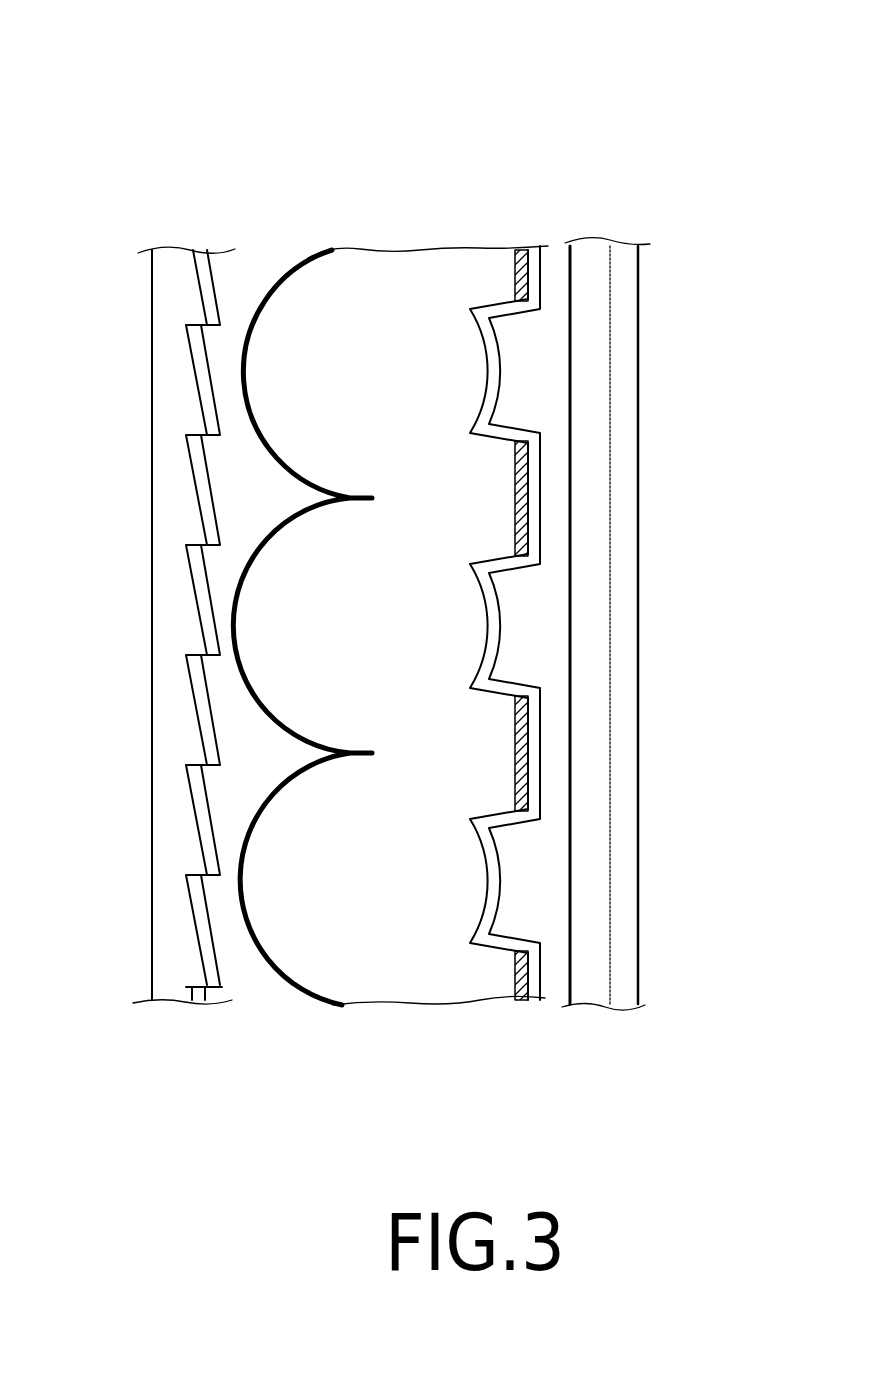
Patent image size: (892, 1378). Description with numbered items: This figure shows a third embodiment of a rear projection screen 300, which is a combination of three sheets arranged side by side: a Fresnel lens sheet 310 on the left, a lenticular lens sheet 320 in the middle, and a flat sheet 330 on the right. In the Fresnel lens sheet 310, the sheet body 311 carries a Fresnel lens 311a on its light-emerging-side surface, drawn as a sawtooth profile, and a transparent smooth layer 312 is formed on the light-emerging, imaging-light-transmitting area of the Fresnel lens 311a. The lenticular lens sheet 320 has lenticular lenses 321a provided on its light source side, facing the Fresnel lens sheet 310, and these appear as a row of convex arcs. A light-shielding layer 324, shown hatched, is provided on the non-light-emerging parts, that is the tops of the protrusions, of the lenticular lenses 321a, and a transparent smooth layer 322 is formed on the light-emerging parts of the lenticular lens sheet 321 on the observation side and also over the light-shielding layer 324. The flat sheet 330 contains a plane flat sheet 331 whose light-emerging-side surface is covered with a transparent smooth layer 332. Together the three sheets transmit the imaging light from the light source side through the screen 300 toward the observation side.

The rear projection screen 300 is at (717, 78).
The Fresnel lens sheet 310 is at (235, 157).
The Fresnel lens sheet body 311 is at (172, 258).
The Fresnel lens 311a is at (198, 937).
The transparent smooth layer 312 is at (217, 268).
The lenticular lens sheet 320 is at (248, 157).
The lenticular lens sheet body 321 is at (355, 292).
The lenticular lenses 321a is at (298, 963).
The transparent smooth layer 322 is at (488, 303).
The light-shielding layer 324 is at (523, 255).
The flat sheet 330 is at (753, 157).
The plane flat sheet 331 is at (590, 258).
The transparent smooth layer 332 is at (625, 273).